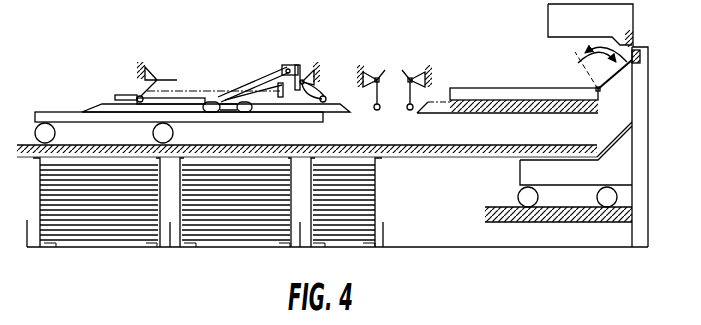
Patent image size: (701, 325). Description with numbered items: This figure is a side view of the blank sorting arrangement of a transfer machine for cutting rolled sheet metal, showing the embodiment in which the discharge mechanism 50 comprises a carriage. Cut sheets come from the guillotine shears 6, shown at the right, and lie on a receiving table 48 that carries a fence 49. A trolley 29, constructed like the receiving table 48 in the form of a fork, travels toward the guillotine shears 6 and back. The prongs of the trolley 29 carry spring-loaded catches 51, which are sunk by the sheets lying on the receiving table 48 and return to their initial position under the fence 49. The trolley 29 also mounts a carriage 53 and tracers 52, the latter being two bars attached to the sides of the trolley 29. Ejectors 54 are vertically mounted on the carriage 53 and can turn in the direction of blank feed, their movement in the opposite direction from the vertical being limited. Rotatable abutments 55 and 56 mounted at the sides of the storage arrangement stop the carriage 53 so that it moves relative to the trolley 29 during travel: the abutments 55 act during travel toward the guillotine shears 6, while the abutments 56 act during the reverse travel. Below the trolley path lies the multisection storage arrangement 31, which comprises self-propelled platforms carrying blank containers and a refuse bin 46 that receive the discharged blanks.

The guillotine shears 6 is at (552, 22).
The trolley 29 is at (60, 117).
The multisection storage arrangement 31 is at (170, 204).
The refuse bin 46 is at (530, 173).
The receiving table 48 is at (494, 96).
The fence 49 is at (583, 62).
The discharge mechanism 50 is at (277, 57).
The spring-loaded catches 51 is at (268, 82).
The tracers 52 is at (102, 104).
The carriage 53 is at (277, 68).
The ejectors 54 is at (333, 88).
The rotatable abutments 55 is at (386, 70).
The rotatable abutments 56 is at (403, 70).